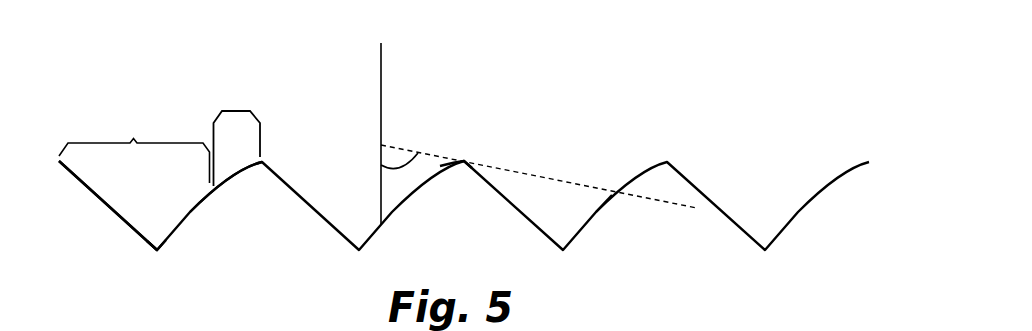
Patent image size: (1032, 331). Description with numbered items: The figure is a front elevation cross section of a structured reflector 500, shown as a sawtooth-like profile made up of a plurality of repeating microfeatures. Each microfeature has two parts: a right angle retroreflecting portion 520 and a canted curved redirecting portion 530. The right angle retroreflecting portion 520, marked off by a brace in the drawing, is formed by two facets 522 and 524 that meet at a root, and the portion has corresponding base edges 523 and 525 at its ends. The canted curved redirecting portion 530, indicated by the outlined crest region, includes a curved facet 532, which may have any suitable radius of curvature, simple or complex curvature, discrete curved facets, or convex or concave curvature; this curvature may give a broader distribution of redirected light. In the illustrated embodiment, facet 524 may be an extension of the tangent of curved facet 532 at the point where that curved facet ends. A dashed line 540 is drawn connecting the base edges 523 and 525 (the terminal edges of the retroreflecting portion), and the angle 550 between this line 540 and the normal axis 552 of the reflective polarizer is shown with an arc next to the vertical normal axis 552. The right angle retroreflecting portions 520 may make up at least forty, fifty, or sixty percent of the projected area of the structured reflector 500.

The structured reflector 500 is at (749, 121).
The right angle retroreflecting portion 520 is at (134, 146).
The facet 522 is at (102, 203).
The facet 524 is at (168, 240).
The canted curved redirecting portion 530 is at (233, 110).
The curved facet 532 is at (240, 172).
The normal axis 552 is at (382, 62).
The line 540 is at (538, 177).
The angle 550 is at (418, 153).
The base edge 523 is at (463, 162).
The base edge 525 is at (617, 192).